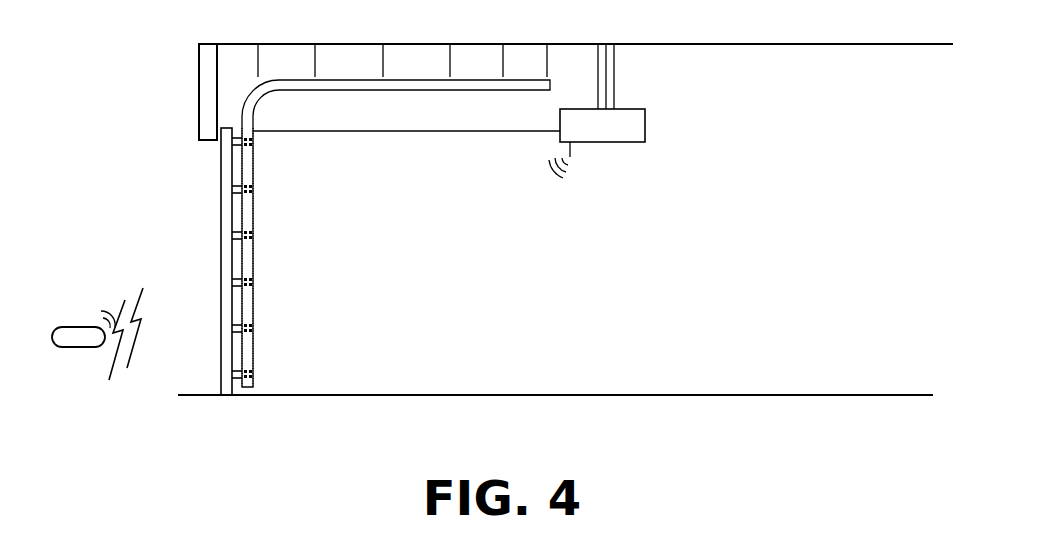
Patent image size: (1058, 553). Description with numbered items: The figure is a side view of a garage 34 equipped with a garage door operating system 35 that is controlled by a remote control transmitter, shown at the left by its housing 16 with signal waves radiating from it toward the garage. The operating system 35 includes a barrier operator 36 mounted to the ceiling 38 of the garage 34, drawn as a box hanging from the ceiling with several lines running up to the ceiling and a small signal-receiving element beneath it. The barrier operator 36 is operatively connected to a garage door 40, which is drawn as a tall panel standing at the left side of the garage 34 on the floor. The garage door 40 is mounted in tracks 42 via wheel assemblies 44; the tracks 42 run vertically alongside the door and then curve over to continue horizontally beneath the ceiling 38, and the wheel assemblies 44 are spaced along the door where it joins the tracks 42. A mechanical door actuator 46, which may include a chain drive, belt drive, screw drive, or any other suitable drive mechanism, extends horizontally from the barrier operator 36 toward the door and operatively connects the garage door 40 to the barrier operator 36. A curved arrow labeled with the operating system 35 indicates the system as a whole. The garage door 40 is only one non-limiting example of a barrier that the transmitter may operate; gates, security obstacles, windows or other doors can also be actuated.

The housing 16 is at (78, 327).
The garage 34 is at (705, 250).
The garage door operating system 35 is at (487, 236).
The barrier operator 36 is at (645, 125).
The ceiling 38 is at (798, 44).
The garage door 40 is at (221, 222).
The tracks 42 is at (255, 262).
The wheel assemblies 44 is at (255, 143).
The mechanical door actuator 46 is at (445, 132).